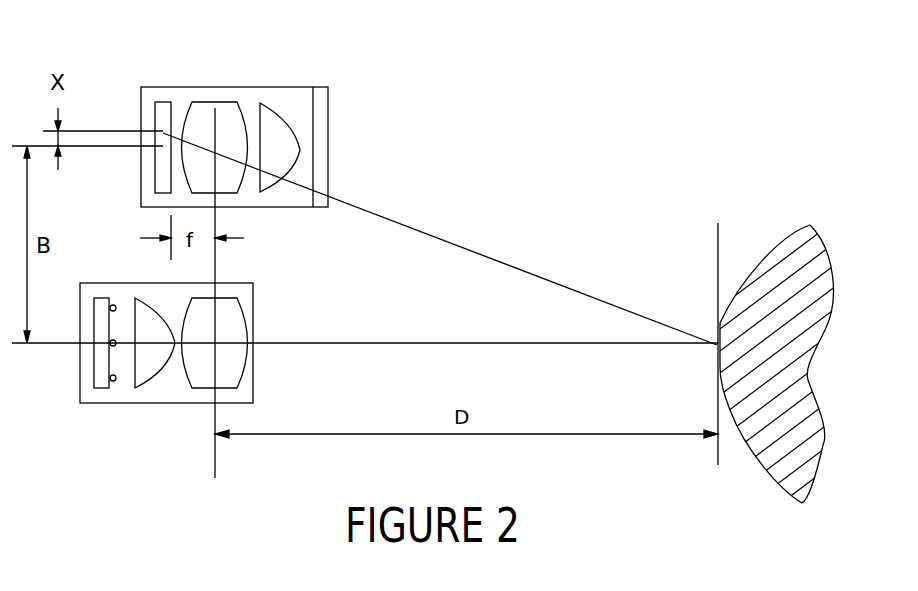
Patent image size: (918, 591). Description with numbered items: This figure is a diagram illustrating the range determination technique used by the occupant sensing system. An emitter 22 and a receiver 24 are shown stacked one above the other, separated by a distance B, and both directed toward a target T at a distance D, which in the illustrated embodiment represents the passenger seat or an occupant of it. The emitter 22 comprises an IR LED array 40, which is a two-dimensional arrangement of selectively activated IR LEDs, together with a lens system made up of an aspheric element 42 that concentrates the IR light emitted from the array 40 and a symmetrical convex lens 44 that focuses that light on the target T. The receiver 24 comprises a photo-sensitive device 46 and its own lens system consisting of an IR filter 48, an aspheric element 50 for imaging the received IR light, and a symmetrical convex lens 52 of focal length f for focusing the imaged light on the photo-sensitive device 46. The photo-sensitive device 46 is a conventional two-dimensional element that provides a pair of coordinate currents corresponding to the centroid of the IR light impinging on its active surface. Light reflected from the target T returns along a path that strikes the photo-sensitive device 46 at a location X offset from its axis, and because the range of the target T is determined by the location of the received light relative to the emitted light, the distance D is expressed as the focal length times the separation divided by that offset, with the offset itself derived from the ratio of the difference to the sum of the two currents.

The emitter 22 is at (78, 347).
The receiver 24 is at (252, 207).
The IR LED array 40 is at (90, 377).
The aspheric element 42 is at (152, 378).
The symmetrical convex lens 44 is at (243, 313).
The photo-sensitive device 46 is at (161, 101).
The IR filter 48 is at (328, 133).
The aspheric element 50 is at (282, 113).
The symmetrical convex lens 52 is at (218, 101).
The target T is at (810, 380).